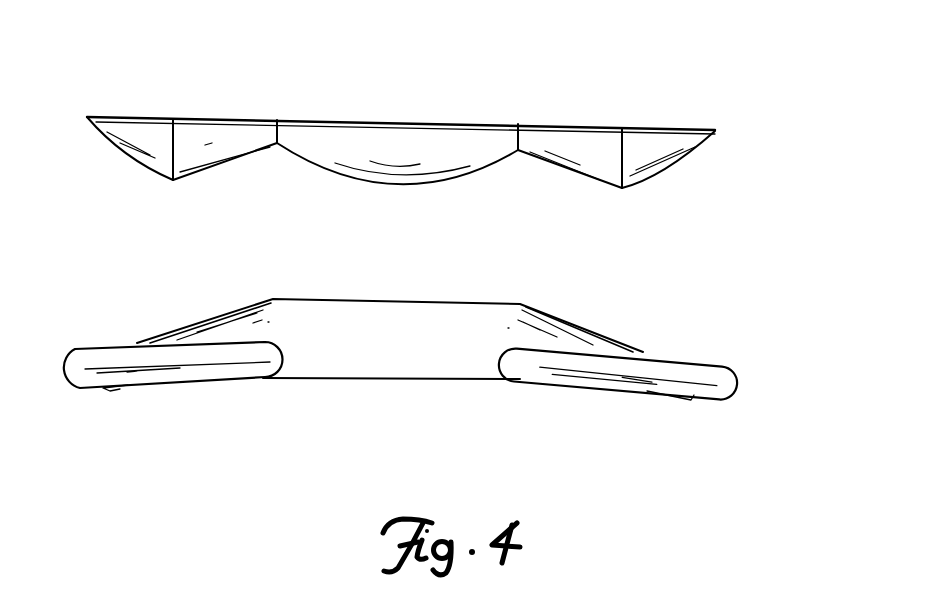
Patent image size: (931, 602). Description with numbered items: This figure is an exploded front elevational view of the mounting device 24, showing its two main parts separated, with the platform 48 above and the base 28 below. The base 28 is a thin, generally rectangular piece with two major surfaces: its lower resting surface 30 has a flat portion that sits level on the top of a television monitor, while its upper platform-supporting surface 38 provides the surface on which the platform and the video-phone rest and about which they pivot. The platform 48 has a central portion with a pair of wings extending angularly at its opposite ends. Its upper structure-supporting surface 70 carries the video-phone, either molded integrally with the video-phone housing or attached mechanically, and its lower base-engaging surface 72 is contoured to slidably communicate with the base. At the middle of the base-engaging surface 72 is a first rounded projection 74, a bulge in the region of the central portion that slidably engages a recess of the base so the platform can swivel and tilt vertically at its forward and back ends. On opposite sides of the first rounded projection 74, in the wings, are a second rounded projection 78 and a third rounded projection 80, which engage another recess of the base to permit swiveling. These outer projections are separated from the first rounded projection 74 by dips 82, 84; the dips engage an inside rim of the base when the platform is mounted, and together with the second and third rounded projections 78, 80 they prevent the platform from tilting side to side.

The mounting device 24 is at (130, 63).
The base 28 is at (401, 341).
The resting surface 30 is at (417, 380).
The platform-supporting surface 38 is at (440, 302).
The platform 48 is at (419, 152).
The structure-supporting surface 70 is at (442, 121).
The base-engaging surface 72 is at (382, 185).
The first rounded projection 74 is at (423, 163).
The second rounded projection 78 is at (148, 158).
The third rounded projection 80 is at (656, 171).
The dip 82 is at (277, 145).
The dip 84 is at (519, 152).